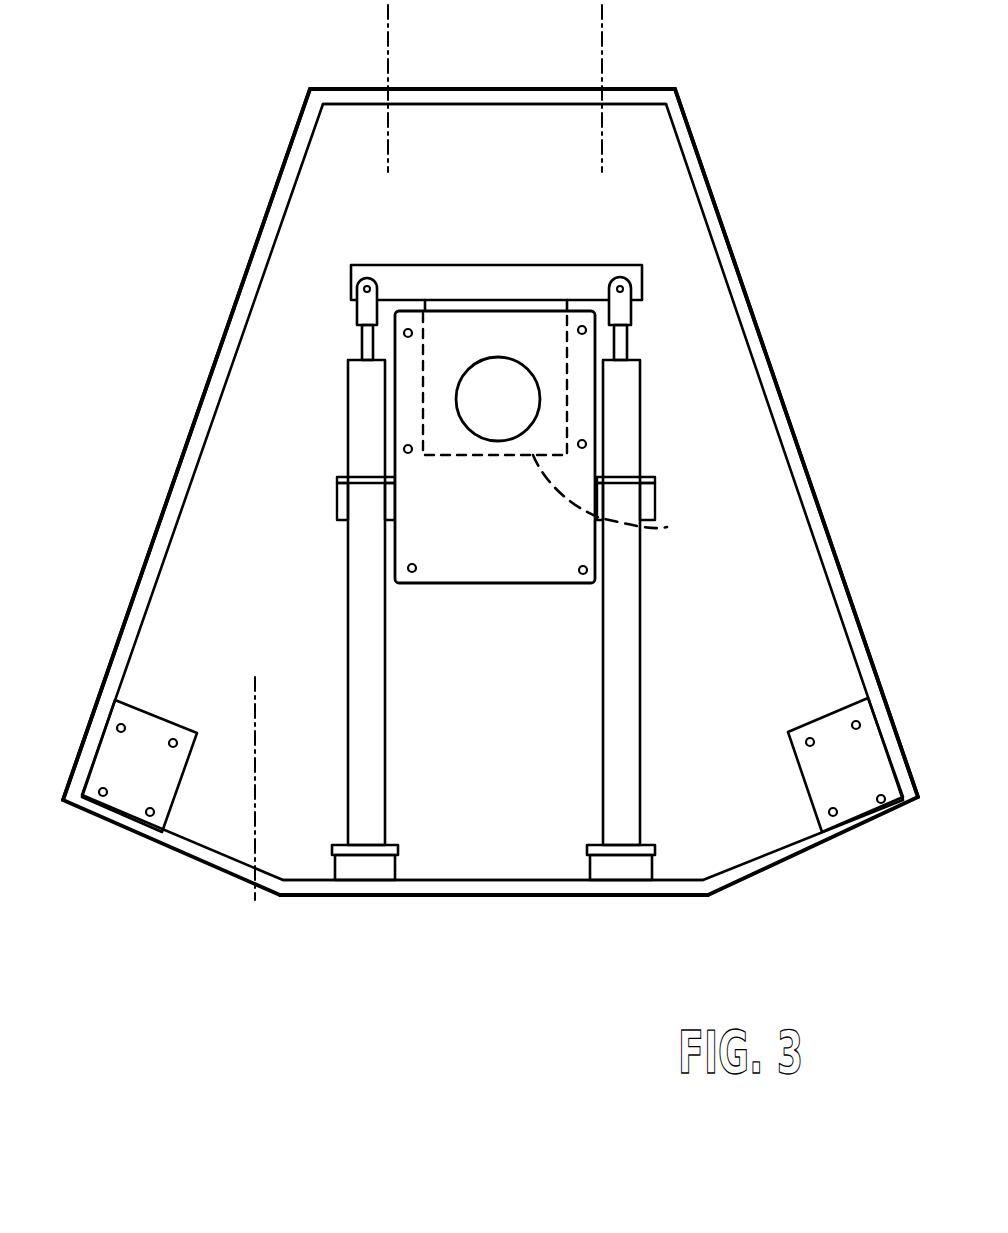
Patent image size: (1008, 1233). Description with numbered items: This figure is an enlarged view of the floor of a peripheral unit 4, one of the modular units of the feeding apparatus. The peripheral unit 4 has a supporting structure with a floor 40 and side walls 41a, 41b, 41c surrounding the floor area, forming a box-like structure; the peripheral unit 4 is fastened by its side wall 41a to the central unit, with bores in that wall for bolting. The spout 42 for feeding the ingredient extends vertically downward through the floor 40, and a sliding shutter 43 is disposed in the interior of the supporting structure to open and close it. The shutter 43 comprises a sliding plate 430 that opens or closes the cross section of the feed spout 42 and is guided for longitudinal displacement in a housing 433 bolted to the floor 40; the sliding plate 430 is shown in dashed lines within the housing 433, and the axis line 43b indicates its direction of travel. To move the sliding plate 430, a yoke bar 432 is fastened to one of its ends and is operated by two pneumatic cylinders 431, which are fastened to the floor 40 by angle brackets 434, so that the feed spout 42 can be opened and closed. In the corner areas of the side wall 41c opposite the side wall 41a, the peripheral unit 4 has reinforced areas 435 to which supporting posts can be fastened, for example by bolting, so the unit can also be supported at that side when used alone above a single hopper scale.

The peripheral unit 4 is at (824, 306).
The floor 40 is at (746, 616).
The side wall 41a is at (478, 88).
The side wall 41b is at (187, 443).
The side wall 41c is at (512, 896).
The spout 42 is at (540, 400).
The sliding shutter 43 is at (542, 535).
The axis line 43b is at (604, 40).
The sliding plate 430 is at (667, 527).
The pneumatic cylinders 431 is at (640, 690).
The yoke bar 432 is at (503, 266).
The housing 433 is at (541, 585).
The angle brackets 434 is at (657, 478).
The reinforced areas 435 is at (181, 780).